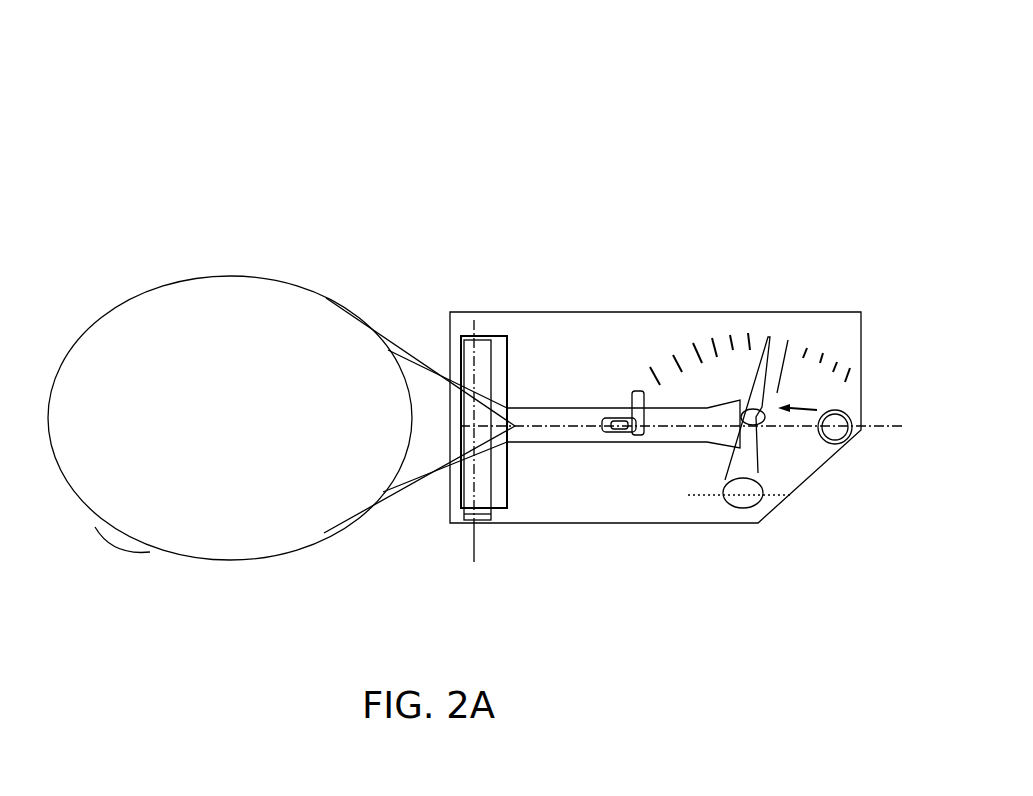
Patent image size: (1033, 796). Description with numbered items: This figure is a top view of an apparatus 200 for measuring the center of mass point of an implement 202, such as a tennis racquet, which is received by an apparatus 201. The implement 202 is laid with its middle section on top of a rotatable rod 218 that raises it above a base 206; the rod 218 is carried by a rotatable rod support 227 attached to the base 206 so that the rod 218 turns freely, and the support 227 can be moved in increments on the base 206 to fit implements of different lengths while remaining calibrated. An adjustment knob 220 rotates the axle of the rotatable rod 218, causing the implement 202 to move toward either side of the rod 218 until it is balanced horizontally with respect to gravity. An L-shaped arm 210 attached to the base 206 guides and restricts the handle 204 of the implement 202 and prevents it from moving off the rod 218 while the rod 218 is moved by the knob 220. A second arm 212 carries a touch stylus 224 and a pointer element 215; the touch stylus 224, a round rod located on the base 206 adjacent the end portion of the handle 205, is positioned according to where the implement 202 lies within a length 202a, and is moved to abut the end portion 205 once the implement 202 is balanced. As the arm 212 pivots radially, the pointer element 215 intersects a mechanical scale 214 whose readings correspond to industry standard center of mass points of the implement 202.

The apparatus 200 is at (223, 72).
The length 202a is at (745, 144).
The implement 202 is at (243, 428).
The apparatus 201 is at (860, 230).
The base 206 is at (618, 487).
The adjustment knob 220 is at (465, 531).
The rotatable rod support 227 is at (500, 490).
The rotatable rod 218 is at (464, 352).
The handle 204 is at (663, 445).
The arm 210 is at (629, 373).
The mechanical scale 214 is at (862, 300).
The arm 212 is at (760, 478).
The end portion of the handle 205 is at (741, 470).
The pointer element 215 is at (775, 382).
The touch stylus 224 is at (786, 404).